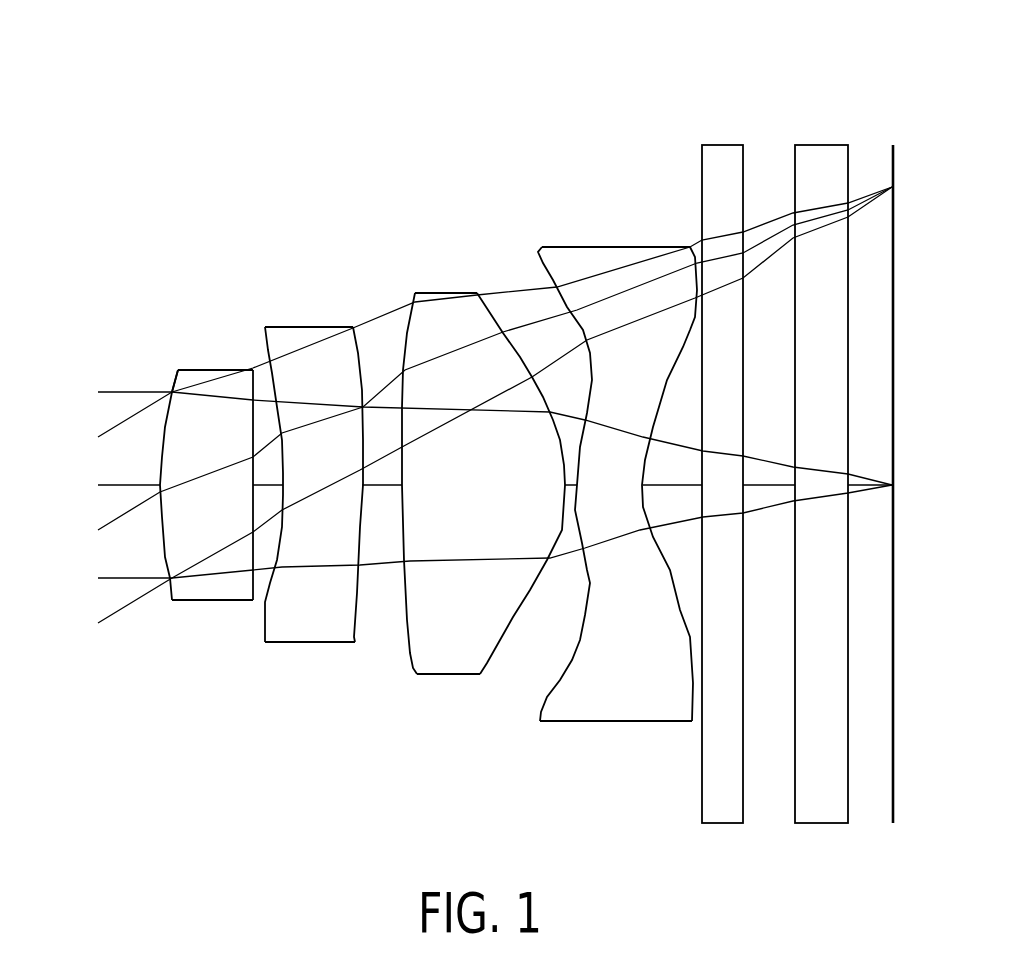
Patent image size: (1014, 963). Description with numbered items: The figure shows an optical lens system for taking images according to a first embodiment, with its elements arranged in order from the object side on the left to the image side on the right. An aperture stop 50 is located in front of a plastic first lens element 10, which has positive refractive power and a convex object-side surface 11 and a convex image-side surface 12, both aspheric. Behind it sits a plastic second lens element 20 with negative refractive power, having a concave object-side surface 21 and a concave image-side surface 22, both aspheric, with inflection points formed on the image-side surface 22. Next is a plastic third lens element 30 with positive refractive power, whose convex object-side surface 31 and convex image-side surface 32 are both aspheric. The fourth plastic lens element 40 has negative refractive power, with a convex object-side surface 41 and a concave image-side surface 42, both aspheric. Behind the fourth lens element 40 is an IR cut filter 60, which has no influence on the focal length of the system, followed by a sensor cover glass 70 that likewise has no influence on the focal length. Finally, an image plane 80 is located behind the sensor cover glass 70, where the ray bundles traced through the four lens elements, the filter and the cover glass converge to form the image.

The first lens element 10 is at (192, 487).
The object-side surface of the first lens element 11 is at (173, 600).
The image-side surface of the first lens element 12 is at (253, 600).
The second lens element 20 is at (326, 483).
The object-side surface of the second lens element 21 is at (270, 600).
The image-side surface of the second lens element 22 is at (357, 641).
The third lens element 30 is at (467, 474).
The object-side surface of the third lens element 31 is at (410, 653).
The image-side surface of the third lens element 32 is at (481, 670).
The fourth lens element 40 is at (617, 475).
The object-side surface of the fourth lens element 41 is at (563, 682).
The image-side surface of the fourth lens element 42 is at (692, 683).
The aperture stop 50 is at (172, 386).
The IR cut filter 60 is at (722, 145).
The sensor cover glass 70 is at (822, 145).
The image plane 80 is at (894, 162).